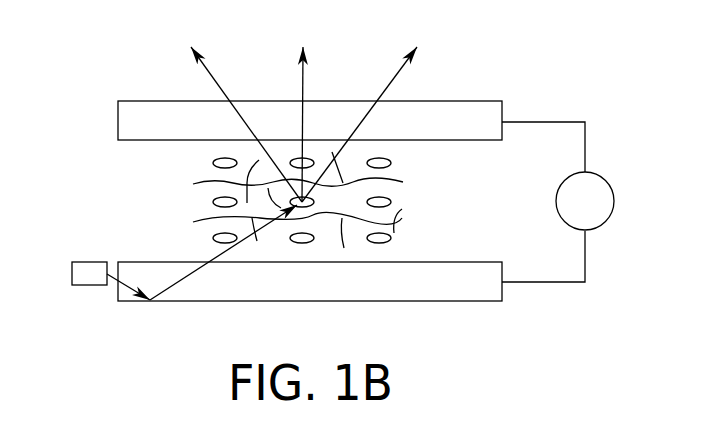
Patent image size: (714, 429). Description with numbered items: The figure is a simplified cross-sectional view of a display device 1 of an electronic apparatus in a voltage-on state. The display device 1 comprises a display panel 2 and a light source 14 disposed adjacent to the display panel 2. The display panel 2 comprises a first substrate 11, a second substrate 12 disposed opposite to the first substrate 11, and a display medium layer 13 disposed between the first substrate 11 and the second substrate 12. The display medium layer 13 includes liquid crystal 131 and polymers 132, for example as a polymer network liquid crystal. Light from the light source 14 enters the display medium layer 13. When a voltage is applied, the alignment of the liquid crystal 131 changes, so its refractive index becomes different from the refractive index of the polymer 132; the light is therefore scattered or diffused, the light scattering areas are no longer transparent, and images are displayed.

The display device 1 is at (62, 51).
The display panel 2 is at (71, 107).
The second substrate 12 is at (133, 121).
The display medium layer 13 is at (118, 140).
The first substrate 11 is at (127, 270).
The light source 14 is at (85, 271).
The liquid crystal 131 is at (392, 163).
The polymer 132 is at (399, 226).